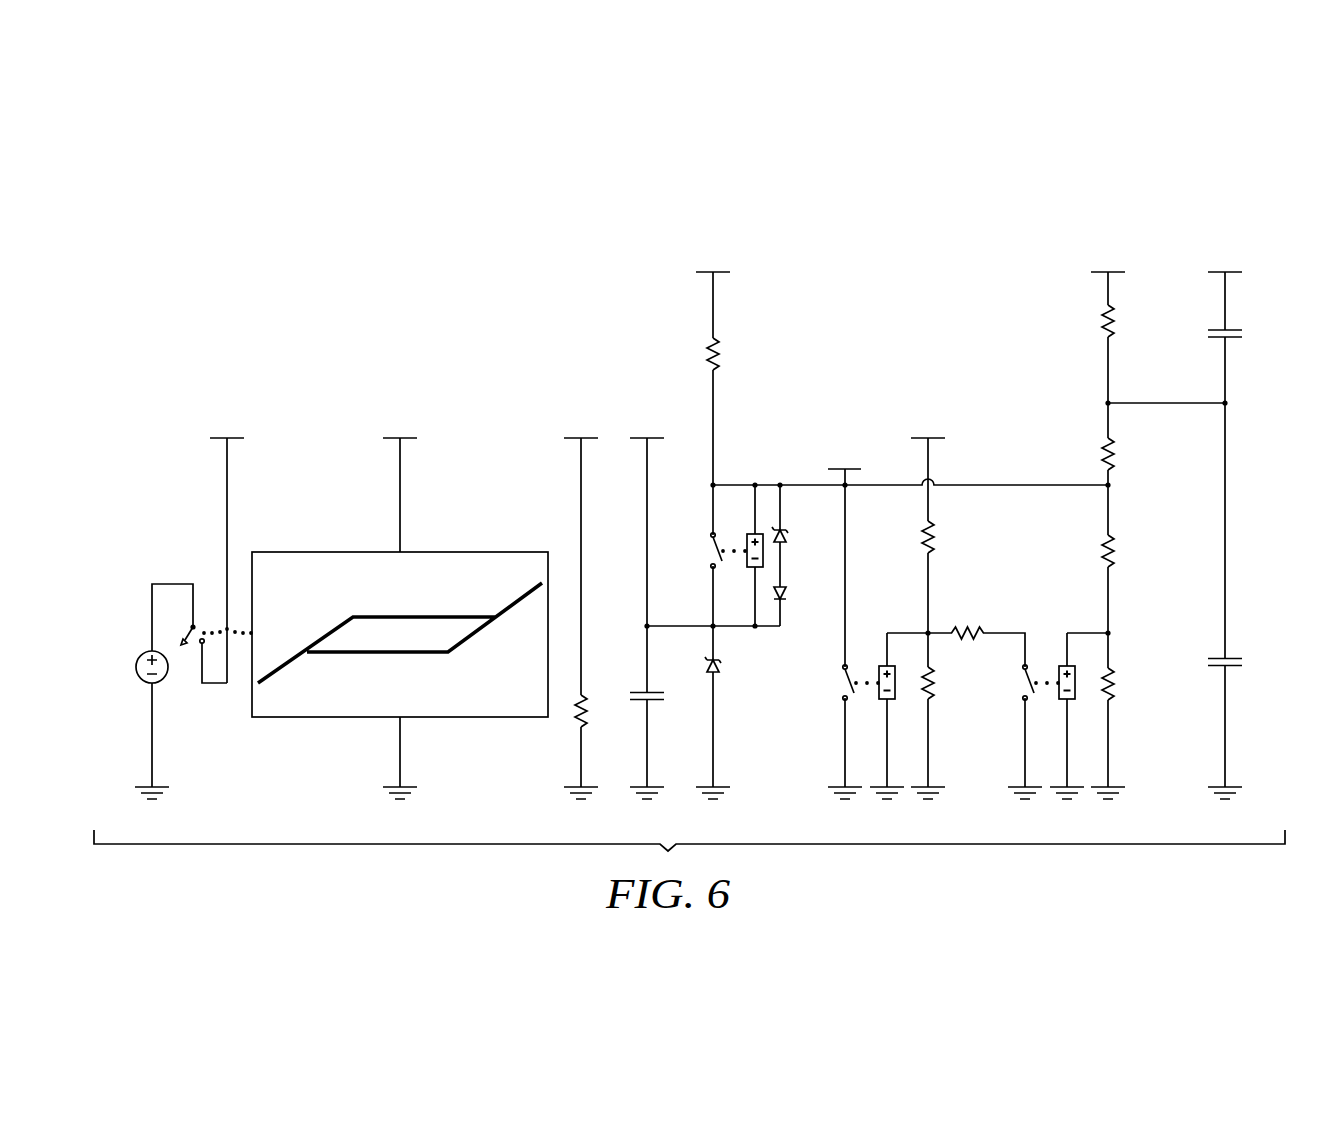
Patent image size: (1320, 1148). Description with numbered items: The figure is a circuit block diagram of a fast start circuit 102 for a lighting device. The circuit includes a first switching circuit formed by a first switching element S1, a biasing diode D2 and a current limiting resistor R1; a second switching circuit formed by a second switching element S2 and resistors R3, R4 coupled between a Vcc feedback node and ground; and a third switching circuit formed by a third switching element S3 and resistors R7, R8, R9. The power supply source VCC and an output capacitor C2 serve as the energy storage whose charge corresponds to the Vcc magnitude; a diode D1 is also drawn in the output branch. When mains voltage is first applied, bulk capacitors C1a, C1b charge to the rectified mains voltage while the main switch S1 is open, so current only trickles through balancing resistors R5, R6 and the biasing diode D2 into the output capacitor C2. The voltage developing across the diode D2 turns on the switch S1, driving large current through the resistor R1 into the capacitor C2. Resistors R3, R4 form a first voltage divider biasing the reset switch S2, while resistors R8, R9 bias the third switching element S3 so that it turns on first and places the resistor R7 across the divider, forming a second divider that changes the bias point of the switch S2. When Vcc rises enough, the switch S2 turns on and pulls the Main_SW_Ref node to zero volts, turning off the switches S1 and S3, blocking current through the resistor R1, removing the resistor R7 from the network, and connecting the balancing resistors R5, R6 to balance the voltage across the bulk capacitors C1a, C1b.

The fast start circuit 102 is at (375, 272).
The current limiting resistor R1 is at (715, 365).
The resistor R3 is at (944, 535).
The resistor R4 is at (938, 716).
The balancing resistor R5 is at (1124, 337).
The balancing resistor R6 is at (1124, 444).
The resistor R7 is at (968, 617).
The resistor R8 is at (1124, 559).
The resistor R9 is at (1118, 716).
The bulk capacitor C1a is at (1248, 337).
The bulk capacitor C1b is at (1248, 601).
The output capacitor C2 is at (655, 605).
The diode D1 is at (723, 712).
The biasing diode D2 is at (794, 555).
The first switching element S1 is at (737, 540).
The second switching element S2 is at (866, 642).
The third switching element S3 is at (1046, 702).